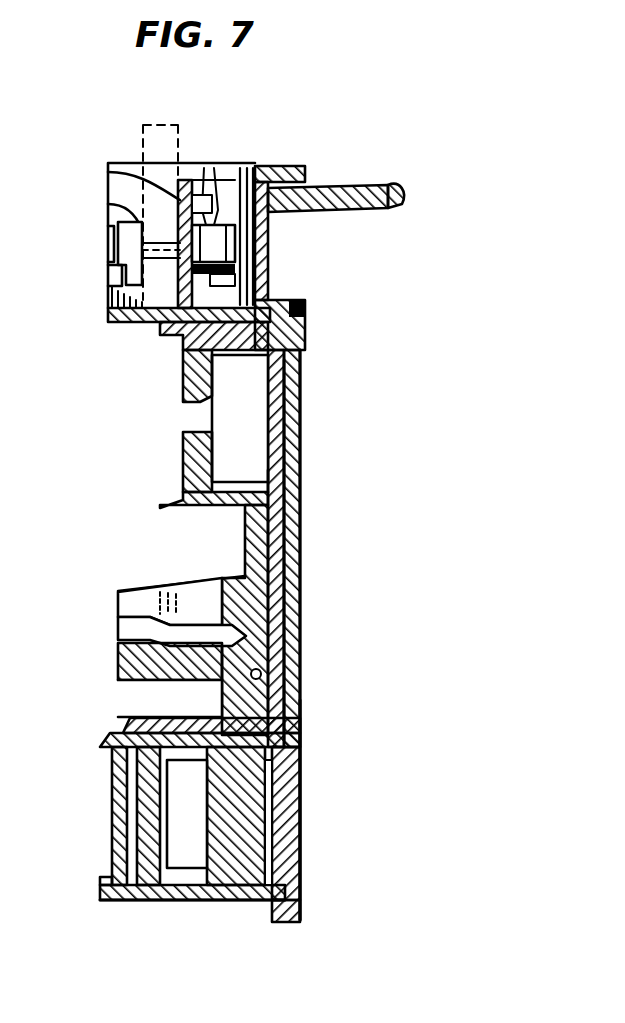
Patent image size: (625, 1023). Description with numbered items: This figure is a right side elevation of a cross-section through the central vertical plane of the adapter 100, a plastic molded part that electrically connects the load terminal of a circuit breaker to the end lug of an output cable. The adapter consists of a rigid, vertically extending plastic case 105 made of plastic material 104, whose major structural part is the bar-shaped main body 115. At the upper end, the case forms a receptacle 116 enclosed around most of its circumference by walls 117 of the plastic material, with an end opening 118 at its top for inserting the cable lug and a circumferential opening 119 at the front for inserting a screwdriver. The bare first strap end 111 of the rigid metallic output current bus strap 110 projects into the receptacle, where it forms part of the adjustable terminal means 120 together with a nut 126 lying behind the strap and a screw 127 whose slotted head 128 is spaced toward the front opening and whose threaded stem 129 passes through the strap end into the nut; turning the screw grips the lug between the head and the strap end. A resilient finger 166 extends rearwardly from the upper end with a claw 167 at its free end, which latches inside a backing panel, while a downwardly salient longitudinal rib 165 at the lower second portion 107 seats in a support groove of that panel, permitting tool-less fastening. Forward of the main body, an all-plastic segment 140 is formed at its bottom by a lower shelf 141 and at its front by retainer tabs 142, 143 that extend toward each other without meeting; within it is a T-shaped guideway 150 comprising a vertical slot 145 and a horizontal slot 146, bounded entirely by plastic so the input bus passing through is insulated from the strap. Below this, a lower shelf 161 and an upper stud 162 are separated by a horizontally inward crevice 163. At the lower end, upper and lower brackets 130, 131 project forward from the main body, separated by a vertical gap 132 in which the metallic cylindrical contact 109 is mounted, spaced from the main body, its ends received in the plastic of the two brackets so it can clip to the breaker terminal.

The adapter 100 is at (82, 479).
The plastic material 104 is at (288, 304).
The plastic case 105 is at (365, 436).
The second portion 107 is at (302, 869).
The cylindrical contact 109 is at (112, 821).
The output current bus strap 110 is at (300, 522).
The first strap end 111 is at (122, 176).
The main body 115 is at (300, 572).
The receptacle 116 is at (112, 278).
The walls 117 is at (122, 322).
The end opening 118 is at (130, 168).
The circumferential opening 119 is at (112, 252).
The adjustable terminal means 120 is at (112, 302).
The nut 126 is at (204, 182).
The screw 127 is at (110, 205).
The slotted head 128 is at (112, 226).
The threaded stem 129 is at (248, 253).
The upper bracket 130 is at (130, 718).
The lower bracket 131 is at (182, 901).
The vertical gap 132 is at (174, 808).
The segment 140 is at (180, 508).
The lower shelf 141 is at (210, 526).
The retainer tab 142 is at (184, 379).
The retainer tab 143 is at (184, 452).
The vertical slot 145 is at (194, 419).
The horizontal slot 146 is at (240, 463).
The guideway 150 is at (240, 377).
The lower shelf 161 is at (120, 660).
The upper stud 162 is at (124, 592).
The crevice 163 is at (150, 636).
The longitudinal rib 165 is at (285, 923).
The resilient finger 166 is at (356, 210).
The claw 167 is at (404, 186).